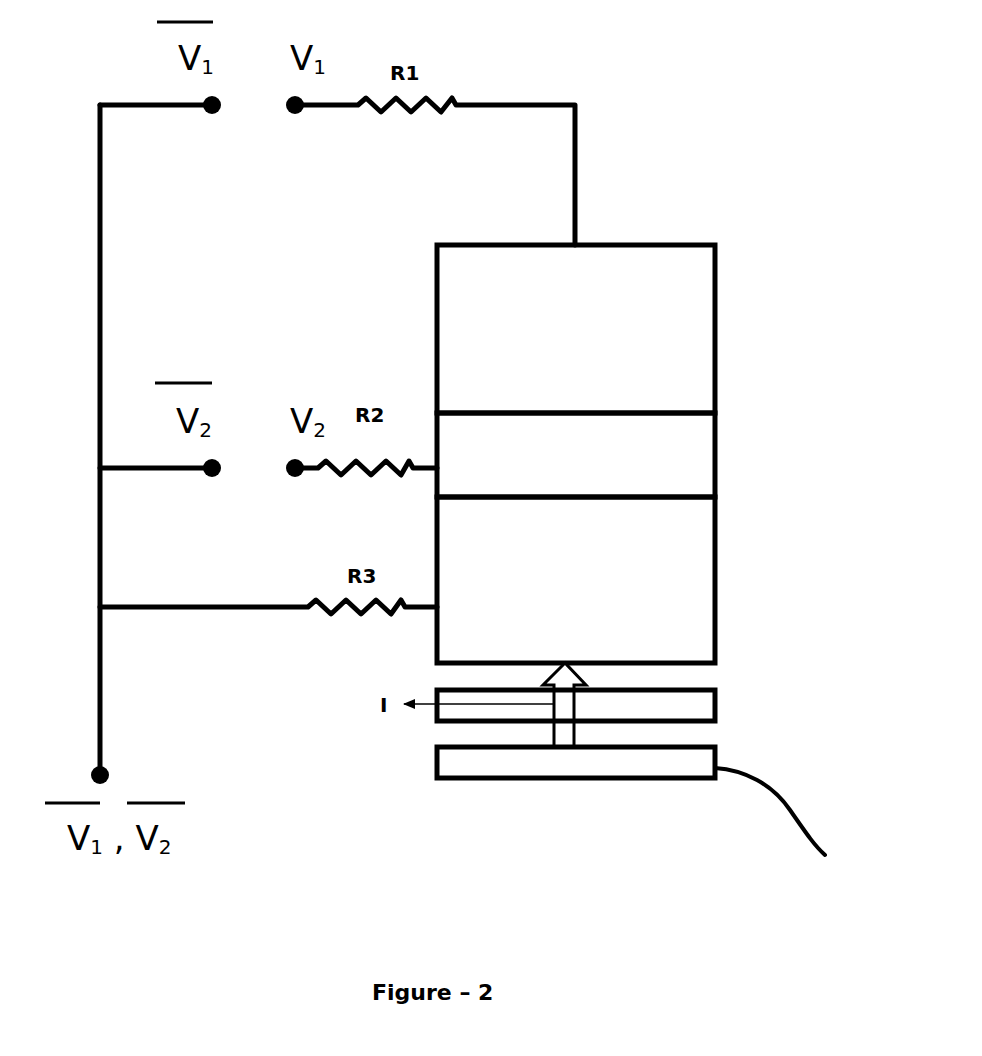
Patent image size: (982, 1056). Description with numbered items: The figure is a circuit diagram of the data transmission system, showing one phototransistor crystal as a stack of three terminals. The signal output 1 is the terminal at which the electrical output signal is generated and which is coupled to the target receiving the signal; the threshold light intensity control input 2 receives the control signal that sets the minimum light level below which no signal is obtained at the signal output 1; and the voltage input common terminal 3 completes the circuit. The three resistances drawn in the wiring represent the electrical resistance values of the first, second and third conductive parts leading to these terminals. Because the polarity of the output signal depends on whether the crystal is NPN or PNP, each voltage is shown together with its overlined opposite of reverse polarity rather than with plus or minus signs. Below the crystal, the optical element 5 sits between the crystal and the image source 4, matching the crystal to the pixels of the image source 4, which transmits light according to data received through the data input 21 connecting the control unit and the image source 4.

The signal output 1 is at (665, 332).
The threshold light intensity control input 2 is at (657, 445).
The voltage input common terminal 3 is at (665, 575).
The image source 4 is at (488, 763).
The optical element 5 is at (695, 703).
The data input 21 is at (765, 787).